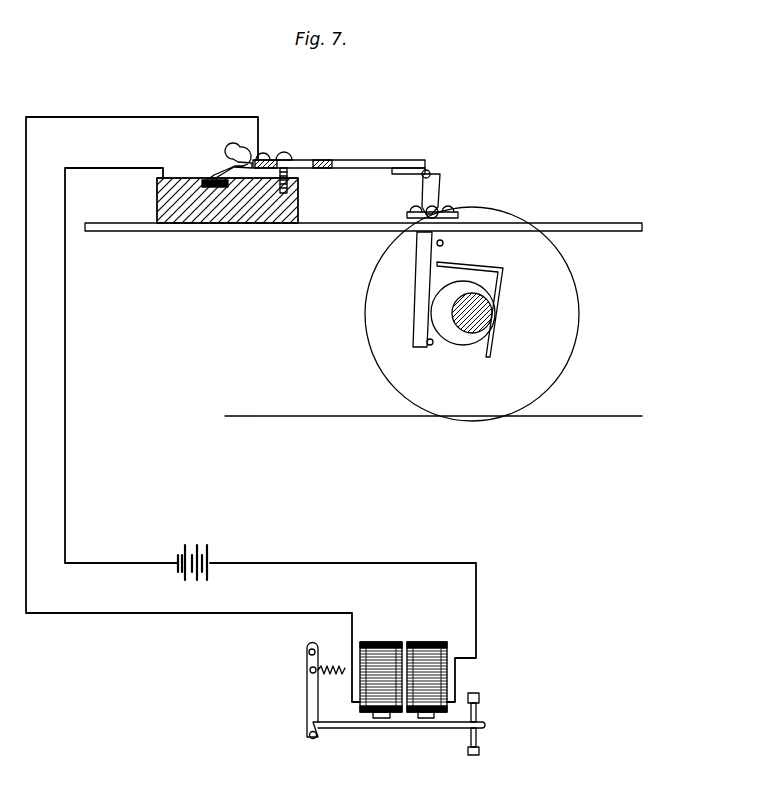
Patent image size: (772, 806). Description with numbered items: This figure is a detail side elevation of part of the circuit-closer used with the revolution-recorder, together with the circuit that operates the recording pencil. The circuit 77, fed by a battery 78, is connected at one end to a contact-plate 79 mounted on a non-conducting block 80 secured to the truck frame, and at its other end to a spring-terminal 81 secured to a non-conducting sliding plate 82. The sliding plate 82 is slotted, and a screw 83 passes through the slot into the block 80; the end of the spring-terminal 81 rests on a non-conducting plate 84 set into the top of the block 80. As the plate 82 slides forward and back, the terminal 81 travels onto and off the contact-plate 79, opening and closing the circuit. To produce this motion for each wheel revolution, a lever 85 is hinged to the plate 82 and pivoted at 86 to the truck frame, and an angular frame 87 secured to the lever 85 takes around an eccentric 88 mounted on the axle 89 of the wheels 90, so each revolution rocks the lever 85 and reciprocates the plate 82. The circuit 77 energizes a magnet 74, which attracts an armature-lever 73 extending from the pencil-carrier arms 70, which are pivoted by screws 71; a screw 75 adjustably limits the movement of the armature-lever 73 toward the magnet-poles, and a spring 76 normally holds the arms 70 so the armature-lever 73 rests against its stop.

The arms 70 is at (307, 709).
The screws 71 is at (316, 739).
The armature-lever 73 is at (413, 728).
The magnet 74 is at (403, 636).
The screw 75 is at (481, 700).
The spring 76 is at (330, 660).
The circuit 77 is at (374, 568).
The battery 78 is at (200, 553).
The contact-plate 79 is at (196, 178).
The non-conducting block 80 is at (263, 218).
The spring-terminal 81 is at (246, 150).
The sliding plate 82 is at (370, 152).
The screw 83 is at (290, 157).
The plate 84 is at (210, 178).
The lever 85 is at (441, 188).
The pivot 86 is at (441, 211).
The angular frame 87 is at (503, 268).
The eccentric 88 is at (465, 342).
The axle 89 is at (497, 312).
The wheels 90 is at (472, 314).